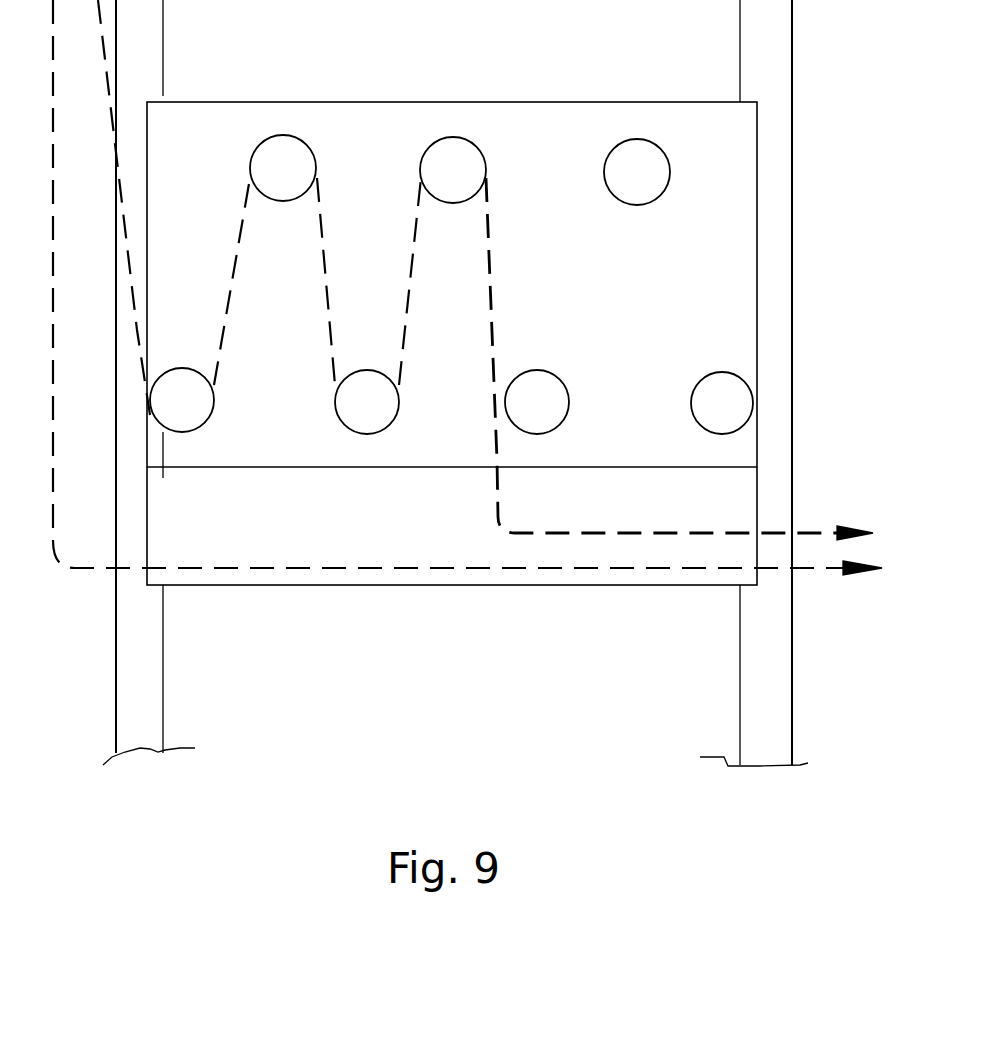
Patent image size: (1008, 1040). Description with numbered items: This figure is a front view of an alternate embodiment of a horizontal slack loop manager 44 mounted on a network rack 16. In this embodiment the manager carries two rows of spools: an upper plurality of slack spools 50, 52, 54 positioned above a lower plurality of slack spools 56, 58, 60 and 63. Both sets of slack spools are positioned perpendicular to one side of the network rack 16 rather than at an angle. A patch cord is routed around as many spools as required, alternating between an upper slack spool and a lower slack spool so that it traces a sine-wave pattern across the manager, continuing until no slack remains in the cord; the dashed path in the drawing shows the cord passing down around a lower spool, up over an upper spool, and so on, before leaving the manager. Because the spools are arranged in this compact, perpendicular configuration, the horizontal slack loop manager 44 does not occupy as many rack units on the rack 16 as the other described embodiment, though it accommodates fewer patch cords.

The network rack 16 is at (799, 43).
The horizontal slack loop manager 44 is at (799, 321).
The slack spool 50 is at (288, 145).
The slack spool 52 is at (455, 157).
The slack spool 54 is at (637, 155).
The slack spool 56 is at (743, 400).
The slack spool 58 is at (545, 418).
The slack spool 60 is at (358, 412).
The slack spool 63 is at (188, 412).